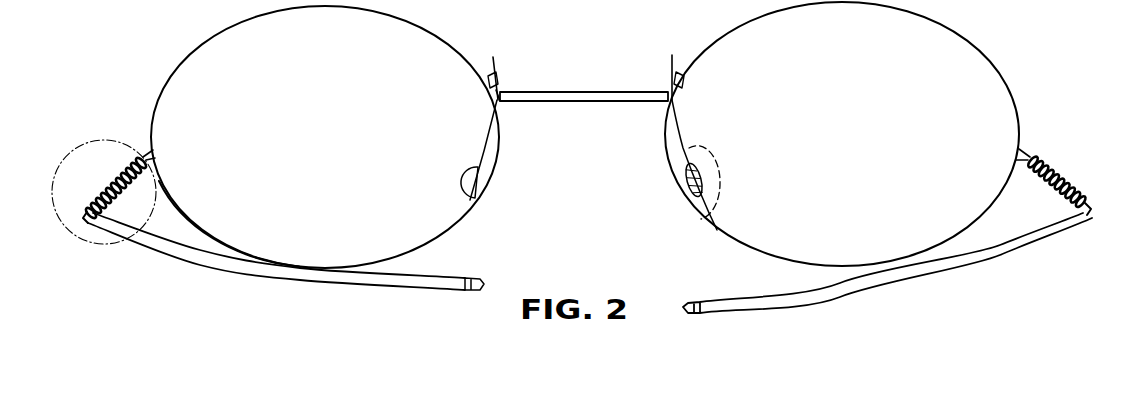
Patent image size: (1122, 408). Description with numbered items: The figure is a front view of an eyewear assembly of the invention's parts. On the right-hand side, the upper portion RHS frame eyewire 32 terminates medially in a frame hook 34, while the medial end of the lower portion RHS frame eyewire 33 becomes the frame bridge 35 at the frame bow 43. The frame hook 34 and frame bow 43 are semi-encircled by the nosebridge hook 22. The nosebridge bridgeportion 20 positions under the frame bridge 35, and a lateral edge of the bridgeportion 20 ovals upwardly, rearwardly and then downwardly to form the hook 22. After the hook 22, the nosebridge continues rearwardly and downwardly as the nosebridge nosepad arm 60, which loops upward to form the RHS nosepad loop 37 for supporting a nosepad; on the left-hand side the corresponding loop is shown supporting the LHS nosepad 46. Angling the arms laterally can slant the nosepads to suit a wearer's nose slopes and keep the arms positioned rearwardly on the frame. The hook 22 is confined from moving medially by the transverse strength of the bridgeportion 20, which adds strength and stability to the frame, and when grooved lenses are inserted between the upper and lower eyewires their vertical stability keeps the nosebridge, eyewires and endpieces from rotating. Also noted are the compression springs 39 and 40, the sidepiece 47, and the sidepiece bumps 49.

The nosebridge bridgeportion 20 is at (584, 111).
The nosebridge hook 22 is at (503, 80).
The upper portion RHS frame eyewire 32 is at (288, 8).
The lower portion RHS frame eyewire 33 is at (200, 221).
The frame hook 34 is at (487, 58).
The frame bridge 35 is at (602, 91).
The RHS nosepad loop 37 is at (460, 190).
The compression spring 39 is at (1070, 166).
The compression spring 40 is at (112, 176).
The frame bow 43 is at (495, 97).
The LHS nosepad 46 is at (706, 232).
The sidepiece 47 is at (304, 273).
The sidepiece bumps 49 is at (472, 276).
The nosebridge nosepad arm 60 is at (480, 145).